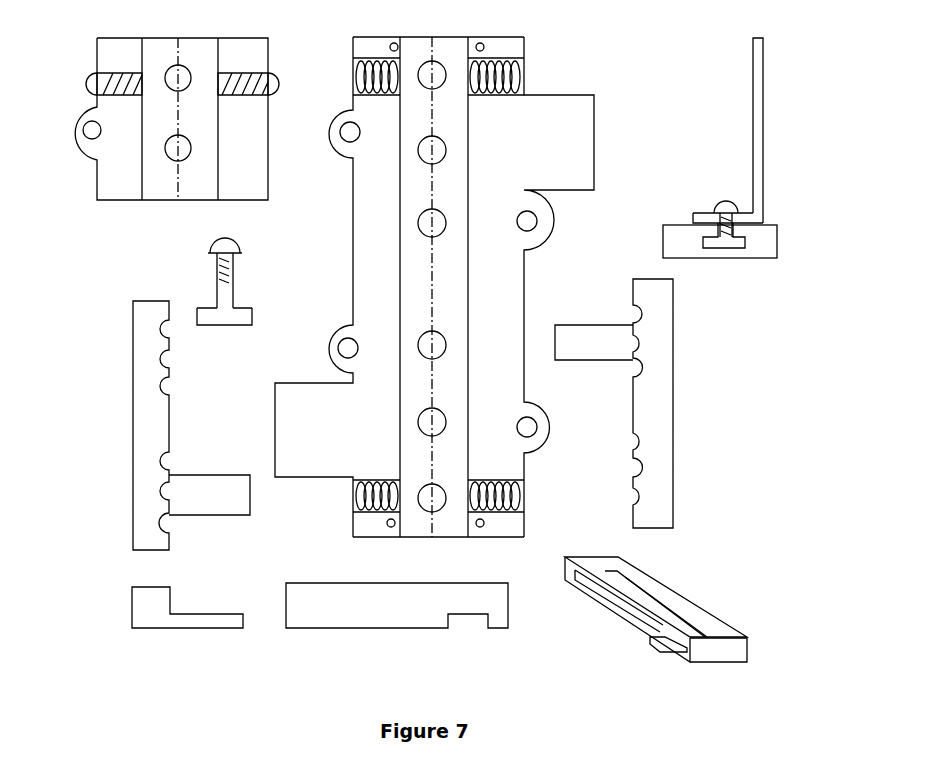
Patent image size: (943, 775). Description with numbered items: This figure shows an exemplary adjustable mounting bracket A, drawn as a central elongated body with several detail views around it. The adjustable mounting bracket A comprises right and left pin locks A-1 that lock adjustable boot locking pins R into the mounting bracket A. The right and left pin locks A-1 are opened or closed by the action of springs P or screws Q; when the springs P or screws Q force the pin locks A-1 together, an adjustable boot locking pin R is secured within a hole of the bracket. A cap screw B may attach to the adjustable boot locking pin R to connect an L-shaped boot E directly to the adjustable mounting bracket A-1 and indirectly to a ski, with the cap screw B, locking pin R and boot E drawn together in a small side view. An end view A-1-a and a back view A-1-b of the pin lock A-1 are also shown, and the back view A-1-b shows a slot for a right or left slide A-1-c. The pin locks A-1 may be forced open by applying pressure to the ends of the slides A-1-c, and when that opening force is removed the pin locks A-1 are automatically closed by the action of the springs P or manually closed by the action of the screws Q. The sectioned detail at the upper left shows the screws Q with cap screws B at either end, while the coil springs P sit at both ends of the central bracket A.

The adjustable mounting bracket A is at (524, 278).
The pin lock A-1 is at (133, 417).
The end view of pin lock A-1-a is at (132, 606).
The back view of pin lock A-1-b is at (330, 582).
The slide A-1-c is at (210, 472).
The cap screw B is at (86, 85).
The L-shaped boot E is at (753, 150).
The spring P is at (526, 77).
The screw Q is at (240, 70).
The adjustable boot locking pin R is at (217, 292).